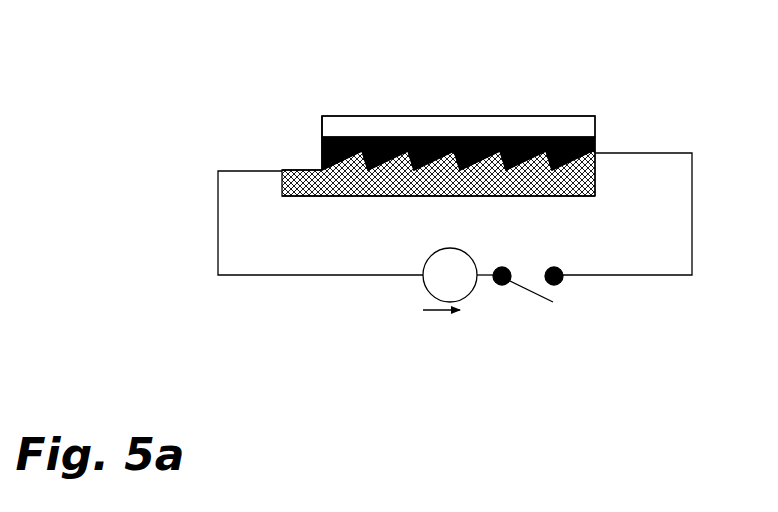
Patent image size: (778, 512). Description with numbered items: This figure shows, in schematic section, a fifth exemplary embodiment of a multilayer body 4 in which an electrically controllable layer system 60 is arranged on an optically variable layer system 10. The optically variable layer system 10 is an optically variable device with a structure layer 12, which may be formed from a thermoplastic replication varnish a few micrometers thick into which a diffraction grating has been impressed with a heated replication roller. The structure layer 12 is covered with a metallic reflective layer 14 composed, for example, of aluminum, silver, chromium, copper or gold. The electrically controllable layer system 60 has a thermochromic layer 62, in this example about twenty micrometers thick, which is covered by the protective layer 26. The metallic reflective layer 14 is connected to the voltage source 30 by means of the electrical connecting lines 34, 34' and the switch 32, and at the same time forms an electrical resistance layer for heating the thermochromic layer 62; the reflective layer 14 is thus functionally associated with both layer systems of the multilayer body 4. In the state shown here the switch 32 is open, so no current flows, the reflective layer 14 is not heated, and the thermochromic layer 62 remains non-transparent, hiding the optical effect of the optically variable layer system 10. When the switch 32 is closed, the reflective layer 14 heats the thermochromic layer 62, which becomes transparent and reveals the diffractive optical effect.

The multilayer body 4 is at (166, 114).
The optically variable layer system 10 is at (606, 155).
The structure layer 12 is at (553, 199).
The metallic reflective layer 14 is at (302, 170).
The protective layer 26 is at (470, 128).
The voltage source 30 is at (438, 350).
The switch 32 is at (535, 300).
The electrical connecting line 34 is at (320, 257).
The electrical connecting line 34' is at (642, 247).
The electrically controllable layer system 60 is at (281, 112).
The thermochromic layer 62 is at (597, 142).